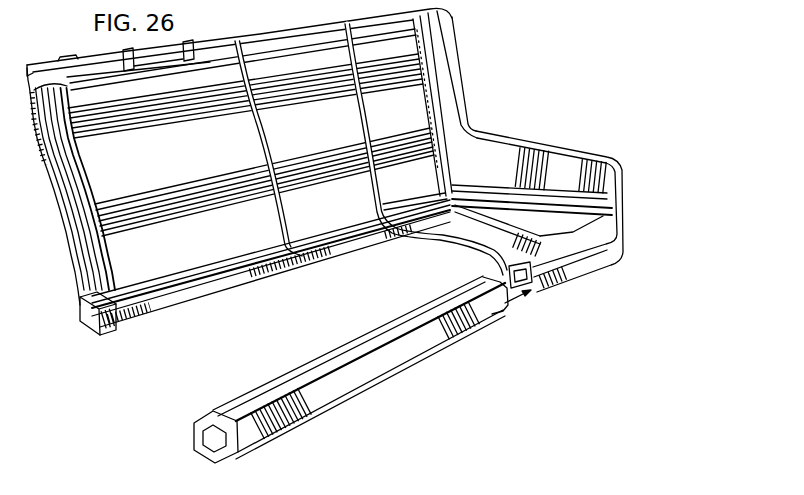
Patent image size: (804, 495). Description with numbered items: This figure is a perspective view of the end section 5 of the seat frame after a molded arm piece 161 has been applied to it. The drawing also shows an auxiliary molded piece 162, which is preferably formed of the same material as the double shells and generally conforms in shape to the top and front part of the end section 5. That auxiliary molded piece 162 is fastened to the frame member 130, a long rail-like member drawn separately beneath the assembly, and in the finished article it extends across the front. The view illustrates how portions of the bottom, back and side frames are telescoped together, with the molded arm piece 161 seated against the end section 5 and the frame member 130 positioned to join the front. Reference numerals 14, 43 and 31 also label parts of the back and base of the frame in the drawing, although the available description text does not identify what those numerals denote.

The end section 5 is at (511, 122).
The back panel 14 is at (193, 187).
The divider tube 43 is at (322, 152).
The base rail 31 is at (119, 323).
The molded arm piece 161 is at (587, 149).
The auxiliary molded piece 162 is at (492, 314).
The frame member 130 is at (223, 462).